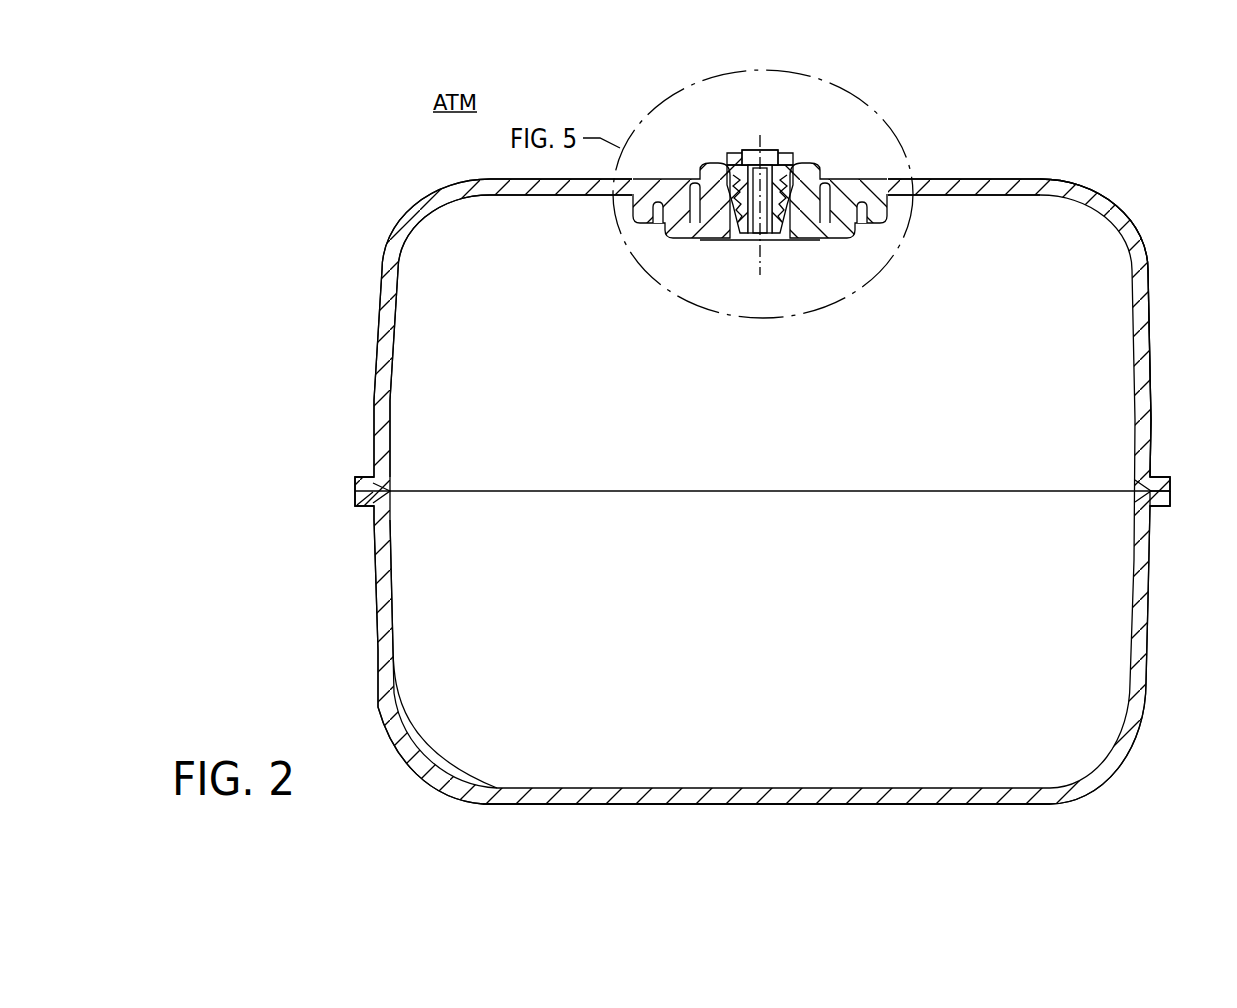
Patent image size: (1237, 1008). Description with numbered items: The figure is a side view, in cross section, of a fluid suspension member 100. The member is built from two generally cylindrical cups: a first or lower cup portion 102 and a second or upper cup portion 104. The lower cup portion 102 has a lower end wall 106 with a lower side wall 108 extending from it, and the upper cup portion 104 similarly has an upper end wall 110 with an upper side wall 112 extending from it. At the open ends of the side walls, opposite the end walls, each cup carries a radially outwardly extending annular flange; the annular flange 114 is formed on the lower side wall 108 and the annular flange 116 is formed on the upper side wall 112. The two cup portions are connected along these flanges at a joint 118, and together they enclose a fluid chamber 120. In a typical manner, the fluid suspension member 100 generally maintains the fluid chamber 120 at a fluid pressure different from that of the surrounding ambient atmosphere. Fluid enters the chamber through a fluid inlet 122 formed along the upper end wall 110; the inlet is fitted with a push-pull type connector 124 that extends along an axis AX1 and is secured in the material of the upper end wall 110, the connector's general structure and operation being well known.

The fluid suspension member 100 is at (930, 136).
The lower cup portion 102 is at (441, 798).
The upper cup portion 104 is at (1106, 194).
The lower end wall 106 is at (720, 804).
The lower side wall 108 is at (393, 625).
The upper end wall 110 is at (550, 196).
The upper side wall 112 is at (392, 368).
The annular flange 114 is at (363, 507).
The annular flange 116 is at (365, 478).
The joint 118 is at (683, 491).
The fluid chamber 120 is at (765, 549).
The fluid inlet 122 is at (799, 126).
The push-pull type connector 124 is at (747, 140).
The axis AX1 is at (760, 258).